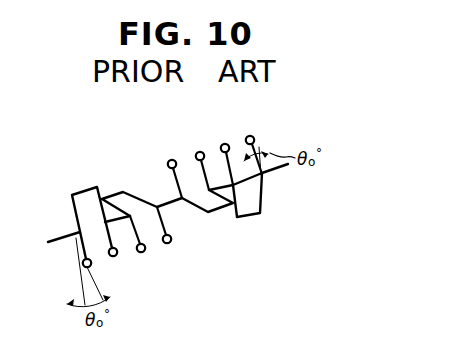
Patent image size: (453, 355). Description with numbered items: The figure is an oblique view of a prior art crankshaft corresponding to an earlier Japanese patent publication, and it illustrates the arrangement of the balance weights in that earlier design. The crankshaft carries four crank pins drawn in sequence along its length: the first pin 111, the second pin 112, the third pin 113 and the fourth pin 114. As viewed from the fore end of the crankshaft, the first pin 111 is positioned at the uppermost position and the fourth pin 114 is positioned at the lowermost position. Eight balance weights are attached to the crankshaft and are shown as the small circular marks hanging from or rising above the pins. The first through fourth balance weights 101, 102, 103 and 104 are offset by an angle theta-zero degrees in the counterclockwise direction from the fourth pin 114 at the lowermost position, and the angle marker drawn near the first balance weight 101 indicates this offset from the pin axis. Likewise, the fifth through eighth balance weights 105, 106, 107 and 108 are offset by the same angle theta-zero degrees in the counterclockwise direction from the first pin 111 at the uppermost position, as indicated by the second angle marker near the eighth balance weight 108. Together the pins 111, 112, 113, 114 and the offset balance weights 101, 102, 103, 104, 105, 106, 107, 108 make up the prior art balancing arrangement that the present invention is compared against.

The No. 1 balance weight 101 is at (82, 264).
The No. 2 balance weight 102 is at (117, 256).
The No. 3 balance weight 103 is at (144, 252).
The No. 4 balance weight 104 is at (171, 242).
The No. 5 balance weight 105 is at (169, 160).
The No. 6 balance weight 106 is at (199, 151).
The No. 7 balance weight 107 is at (225, 143).
The No. 8 balance weight 108 is at (256, 139).
The No. 1 pin 111 is at (82, 190).
The No. 2 pin 112 is at (113, 192).
The No. 3 pin 113 is at (220, 209).
The No. 4 pin 114 is at (252, 215).